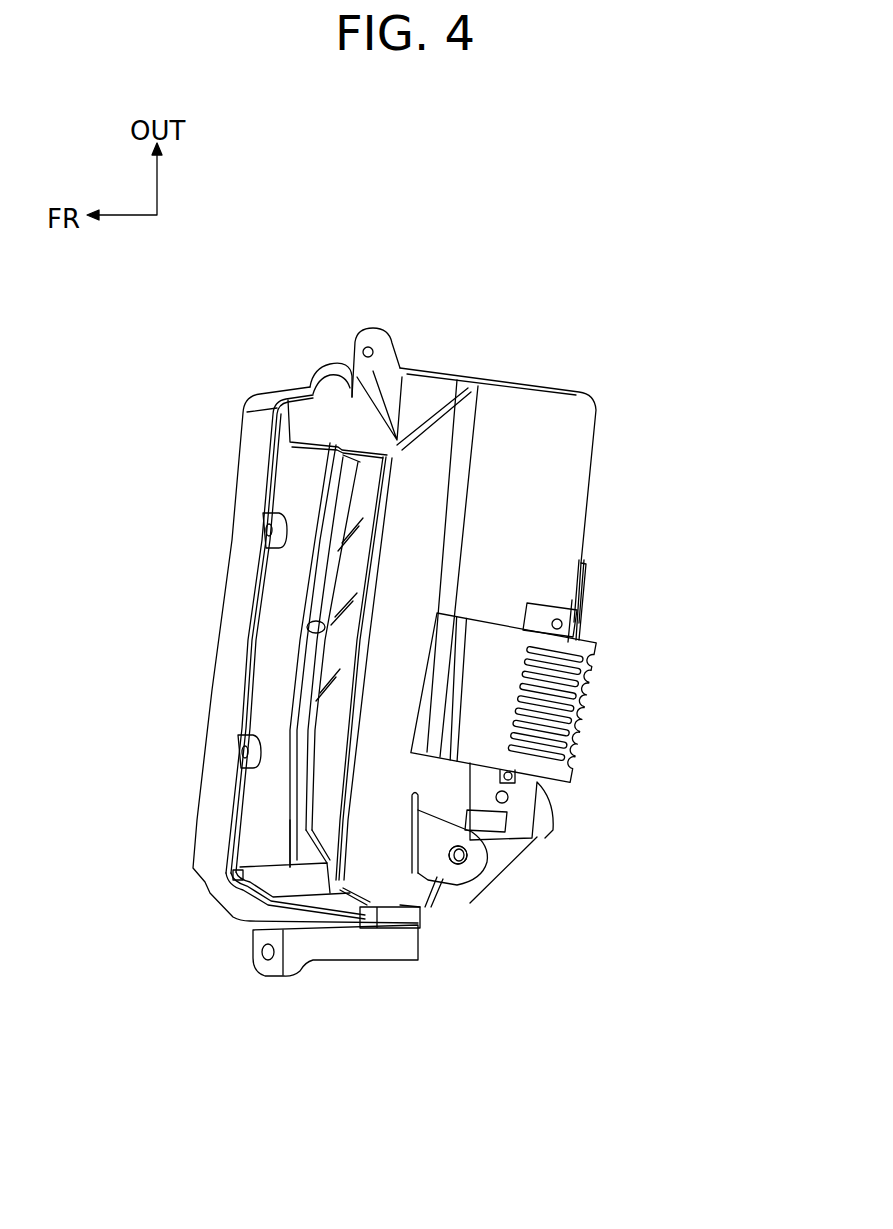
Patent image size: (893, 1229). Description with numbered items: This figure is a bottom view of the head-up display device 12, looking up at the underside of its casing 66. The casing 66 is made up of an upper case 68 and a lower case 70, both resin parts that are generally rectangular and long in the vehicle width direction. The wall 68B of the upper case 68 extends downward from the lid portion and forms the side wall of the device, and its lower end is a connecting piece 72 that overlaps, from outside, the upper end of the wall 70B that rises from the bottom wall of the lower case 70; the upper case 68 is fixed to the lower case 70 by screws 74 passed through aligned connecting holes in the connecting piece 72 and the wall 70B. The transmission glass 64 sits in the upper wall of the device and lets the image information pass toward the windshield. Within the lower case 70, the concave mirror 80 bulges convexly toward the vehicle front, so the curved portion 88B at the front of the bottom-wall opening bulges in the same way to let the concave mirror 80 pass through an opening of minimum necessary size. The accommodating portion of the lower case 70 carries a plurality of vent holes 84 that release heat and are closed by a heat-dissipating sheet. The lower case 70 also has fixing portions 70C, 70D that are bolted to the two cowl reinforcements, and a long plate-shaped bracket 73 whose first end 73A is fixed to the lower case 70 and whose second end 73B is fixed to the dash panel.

The head-up display device 12 is at (680, 378).
The transmission glass 64 is at (347, 580).
The casing 66 is at (612, 455).
The upper case 68 is at (199, 810).
The wall 68B is at (237, 595).
The lower case 70 is at (590, 513).
The wall 70B is at (263, 838).
The fixing portion 70C is at (373, 373).
The fixing portion 70D is at (270, 978).
The connecting piece 72 is at (263, 515).
The bracket 73 is at (447, 863).
The first end 73A is at (402, 845).
The second end 73B is at (477, 857).
The screws 74 is at (262, 530).
The concave mirror 80 is at (292, 660).
The vent holes 84 is at (580, 737).
The curved portion 88B is at (310, 628).